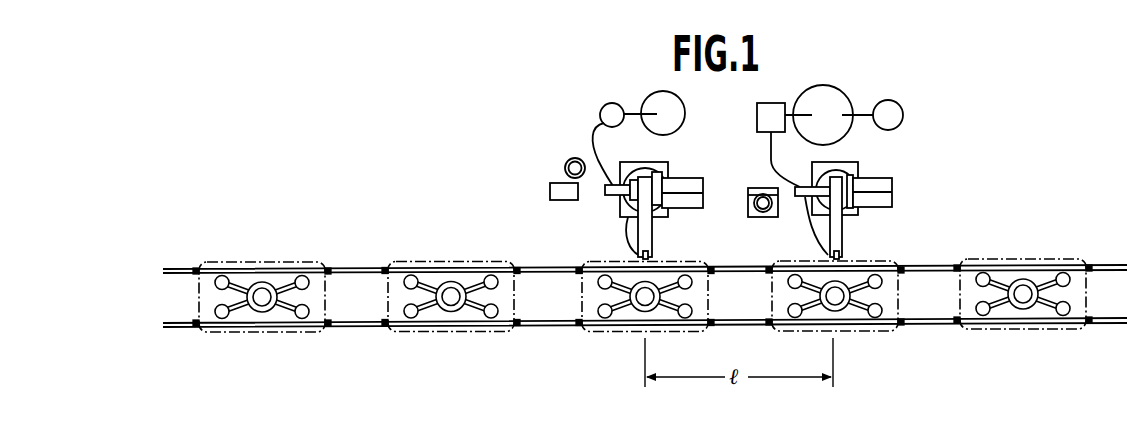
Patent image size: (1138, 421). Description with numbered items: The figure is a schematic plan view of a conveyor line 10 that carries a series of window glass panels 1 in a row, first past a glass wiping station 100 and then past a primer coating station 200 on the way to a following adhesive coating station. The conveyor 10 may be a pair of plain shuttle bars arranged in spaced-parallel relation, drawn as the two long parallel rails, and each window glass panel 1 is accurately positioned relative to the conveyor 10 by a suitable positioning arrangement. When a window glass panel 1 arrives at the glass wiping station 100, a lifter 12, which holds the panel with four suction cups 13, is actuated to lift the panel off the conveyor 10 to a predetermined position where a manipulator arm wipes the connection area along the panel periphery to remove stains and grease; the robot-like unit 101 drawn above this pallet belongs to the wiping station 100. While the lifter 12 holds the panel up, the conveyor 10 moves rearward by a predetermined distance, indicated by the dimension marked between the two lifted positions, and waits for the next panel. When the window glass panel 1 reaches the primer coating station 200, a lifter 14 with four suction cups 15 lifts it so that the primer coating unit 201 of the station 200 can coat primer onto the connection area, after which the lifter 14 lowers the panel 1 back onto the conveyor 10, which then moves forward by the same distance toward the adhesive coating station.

The window glass panel 1 is at (593, 333).
The conveyor line 10 is at (540, 328).
The lifter 12 is at (639, 316).
The suction cups 13 is at (687, 276).
The lifter 14 is at (841, 316).
The suction cups 15 is at (877, 275).
The glass wiping station 100 is at (586, 175).
The hand of first robot 101 is at (668, 167).
The primer coating station 200 is at (894, 172).
The hand of second robot 201 is at (858, 165).